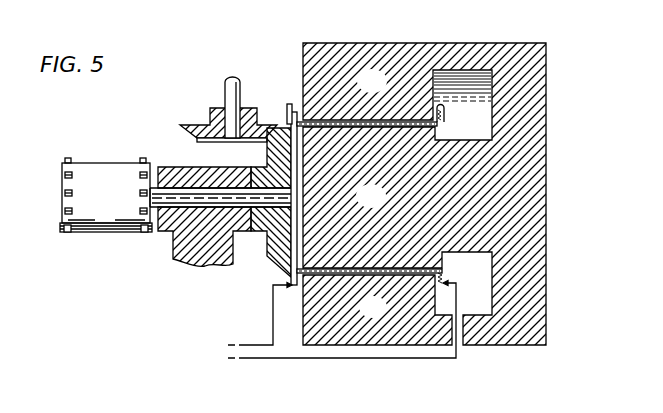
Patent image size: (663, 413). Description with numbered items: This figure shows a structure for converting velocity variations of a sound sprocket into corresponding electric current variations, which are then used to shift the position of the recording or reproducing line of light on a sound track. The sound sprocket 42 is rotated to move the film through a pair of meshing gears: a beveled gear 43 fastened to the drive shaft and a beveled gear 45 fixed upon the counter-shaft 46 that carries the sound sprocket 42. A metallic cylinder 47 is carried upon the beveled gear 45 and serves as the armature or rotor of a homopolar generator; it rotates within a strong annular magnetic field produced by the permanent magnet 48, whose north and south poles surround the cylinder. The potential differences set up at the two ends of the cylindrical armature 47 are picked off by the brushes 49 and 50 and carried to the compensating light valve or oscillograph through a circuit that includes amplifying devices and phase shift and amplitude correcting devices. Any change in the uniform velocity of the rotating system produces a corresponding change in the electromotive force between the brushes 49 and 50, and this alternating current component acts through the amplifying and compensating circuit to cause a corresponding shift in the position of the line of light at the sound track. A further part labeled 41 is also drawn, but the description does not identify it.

The pin 41 is at (225, 88).
The sound sprocket 42 is at (115, 166).
The beveled gear 43 is at (209, 123).
The beveled gear 45 is at (276, 241).
The counter-shaft 46 is at (153, 190).
The metallic cylinder 47 is at (296, 110).
The permanent magnet 48 is at (408, 56).
The brush 49 is at (285, 290).
The brush 50 is at (347, 310).